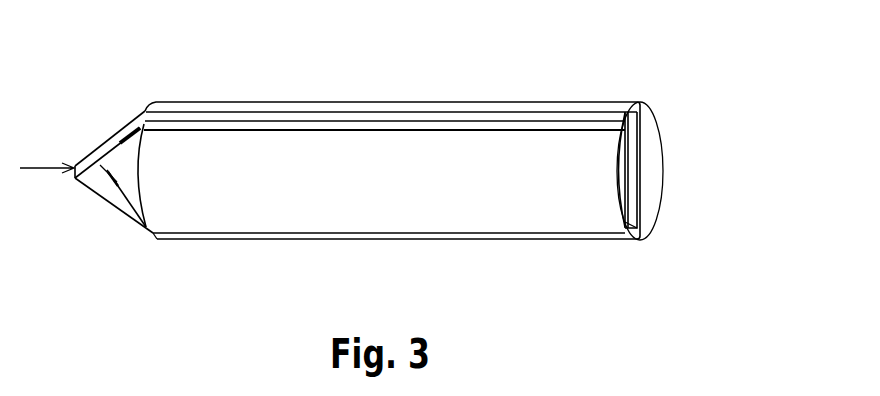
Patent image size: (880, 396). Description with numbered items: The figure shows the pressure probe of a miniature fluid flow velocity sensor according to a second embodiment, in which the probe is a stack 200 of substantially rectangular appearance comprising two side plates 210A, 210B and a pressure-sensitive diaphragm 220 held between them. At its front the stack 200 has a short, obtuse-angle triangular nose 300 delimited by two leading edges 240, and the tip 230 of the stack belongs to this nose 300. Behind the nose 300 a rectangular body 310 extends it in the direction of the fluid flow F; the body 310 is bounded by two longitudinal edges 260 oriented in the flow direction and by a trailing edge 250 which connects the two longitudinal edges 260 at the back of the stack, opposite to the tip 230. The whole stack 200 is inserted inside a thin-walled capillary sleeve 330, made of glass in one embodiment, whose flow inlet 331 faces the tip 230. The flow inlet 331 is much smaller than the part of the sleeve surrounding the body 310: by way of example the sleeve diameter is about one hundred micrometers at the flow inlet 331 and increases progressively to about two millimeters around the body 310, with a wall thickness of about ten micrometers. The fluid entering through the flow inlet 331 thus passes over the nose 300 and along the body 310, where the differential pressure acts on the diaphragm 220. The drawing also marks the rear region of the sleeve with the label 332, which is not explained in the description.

The stack 200 is at (387, 95).
The side plate 210A is at (568, 103).
The side plate 210B is at (562, 237).
The pressure-sensitive diaphragm 220 is at (635, 175).
The tip 230 is at (100, 180).
The leading edges 240 is at (128, 132).
The trailing edge 250 is at (627, 214).
The longitudinal edges 260 is at (325, 120).
The nose 300 is at (117, 182).
The body 310 is at (457, 195).
The capillary sleeve 330 is at (95, 150).
The flow inlet 331 is at (82, 182).
The rear end region 332 is at (653, 122).
The fluid flow F is at (42, 166).